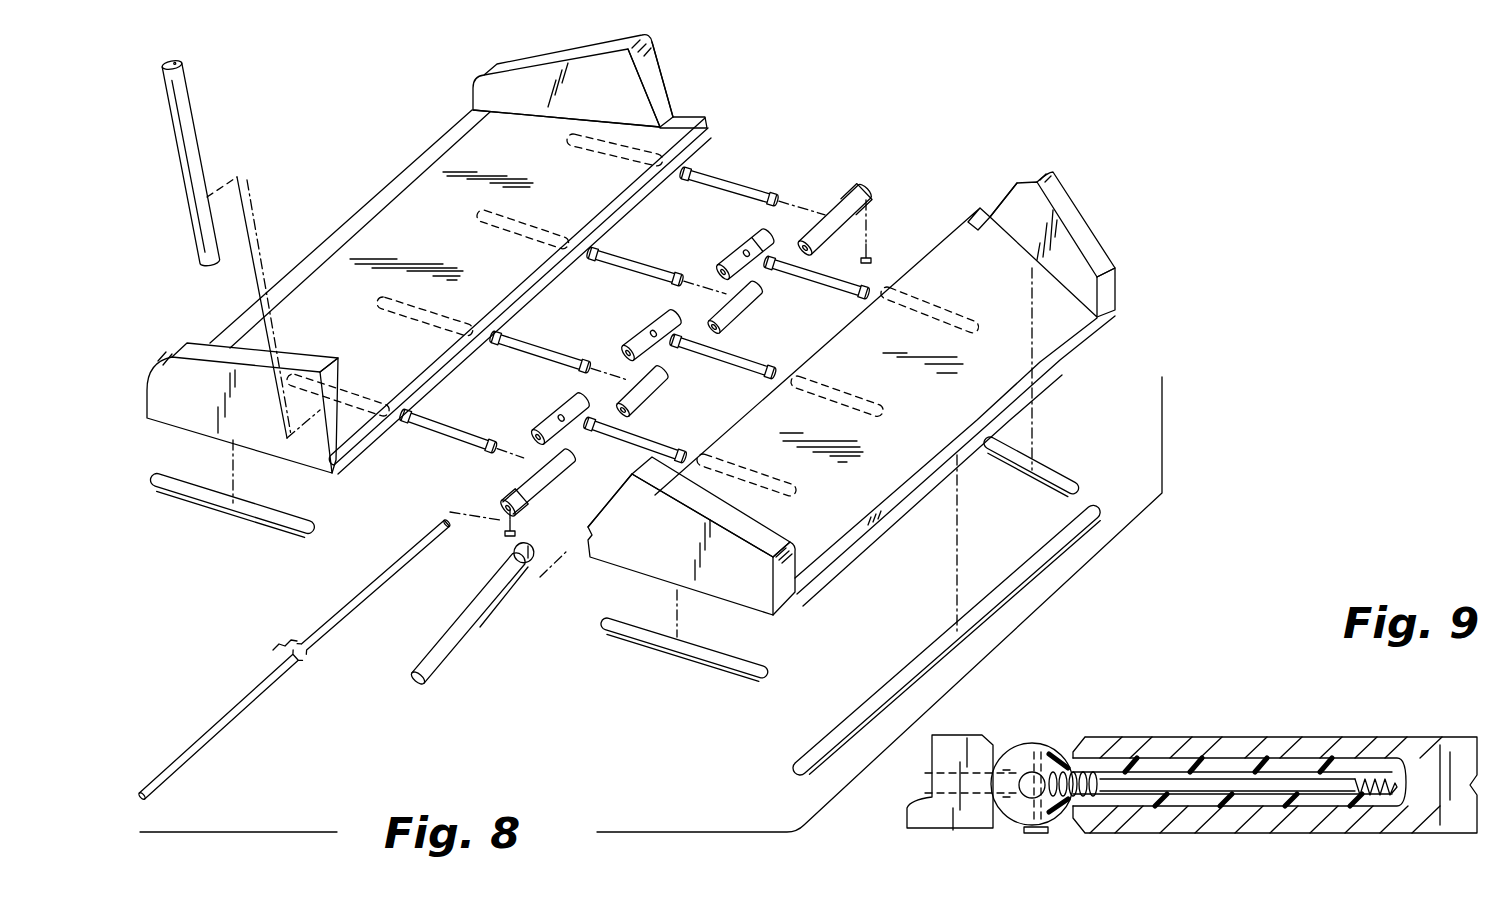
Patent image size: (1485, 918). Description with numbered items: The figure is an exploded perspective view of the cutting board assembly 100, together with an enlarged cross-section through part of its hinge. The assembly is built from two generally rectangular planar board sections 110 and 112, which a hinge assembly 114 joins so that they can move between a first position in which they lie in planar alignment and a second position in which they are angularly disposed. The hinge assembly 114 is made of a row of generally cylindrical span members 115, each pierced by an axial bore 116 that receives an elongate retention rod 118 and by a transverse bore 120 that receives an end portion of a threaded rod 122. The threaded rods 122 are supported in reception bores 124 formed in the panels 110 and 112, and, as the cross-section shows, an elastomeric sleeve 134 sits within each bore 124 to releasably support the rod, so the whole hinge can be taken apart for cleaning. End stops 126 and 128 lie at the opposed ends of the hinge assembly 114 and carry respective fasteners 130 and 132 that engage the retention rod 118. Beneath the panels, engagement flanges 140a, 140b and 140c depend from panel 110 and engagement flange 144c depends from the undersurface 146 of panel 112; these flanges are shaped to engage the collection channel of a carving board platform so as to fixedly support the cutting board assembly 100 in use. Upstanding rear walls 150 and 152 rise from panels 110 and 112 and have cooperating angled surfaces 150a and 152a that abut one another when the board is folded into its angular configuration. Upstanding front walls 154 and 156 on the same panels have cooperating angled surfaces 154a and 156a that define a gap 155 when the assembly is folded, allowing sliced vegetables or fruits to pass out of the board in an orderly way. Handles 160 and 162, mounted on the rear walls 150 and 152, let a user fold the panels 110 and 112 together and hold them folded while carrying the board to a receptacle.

In FIG. 8, the cutting board assembly 100 is at (1172, 147).
In FIG. 8, the planar board section 110 is at (1053, 307).
In FIG. 9, the planar board section 110 is at (1347, 760).
In FIG. 8, the planar board section 112 is at (368, 240).
In FIG. 9, the planar board section 112 is at (932, 820).
In FIG. 8, the hinge assembly 114 is at (902, 153).
In FIG. 8, the span member 115 is at (636, 337).
In FIG. 8, the axial bore 116 is at (535, 437).
In FIG. 8, the retention rod 118 is at (230, 710).
In FIG. 9, the retention rod 118 is at (1027, 770).
In FIG. 8, the transverse bore 120 is at (755, 232).
In FIG. 8, the threaded rod 122 is at (725, 183).
In FIG. 9, the threaded rod 122 is at (1300, 783).
In FIG. 8, the reception bore 124 is at (573, 145).
In FIG. 9, the reception bore 124 is at (1207, 760).
In FIG. 8, the end stop 126 is at (500, 503).
In FIG. 8, the end stop 128 is at (862, 187).
In FIG. 8, the fastener 130 is at (508, 533).
In FIG. 8, the fastener 132 is at (872, 243).
In FIG. 9, the fastener 132 is at (1027, 827).
In FIG. 9, the elastomeric sleeve 134 is at (1257, 770).
In FIG. 8, the engagement flange 140a is at (1020, 570).
In FIG. 8, the engagement flange 140b is at (697, 653).
In FIG. 8, the engagement flange 140c is at (1040, 470).
In FIG. 8, the engagement flange 144c is at (222, 508).
In FIG. 8, the undersurface 146 is at (642, 200).
In FIG. 8, the rear wall 150 is at (748, 577).
In FIG. 8, the angled surface 150a is at (585, 483).
In FIG. 8, the rear wall 152 is at (193, 372).
In FIG. 8, the angled surface 152a is at (340, 375).
In FIG. 8, the front wall 154 is at (1065, 245).
In FIG. 8, the angled surface 154a is at (1012, 187).
In FIG. 9, the gap 155 is at (1042, 745).
In FIG. 8, the front wall 156 is at (500, 90).
In FIG. 8, the angled surface 156a is at (650, 70).
In FIG. 8, the handle 160 is at (420, 673).
In FIG. 8, the handle 162 is at (195, 120).